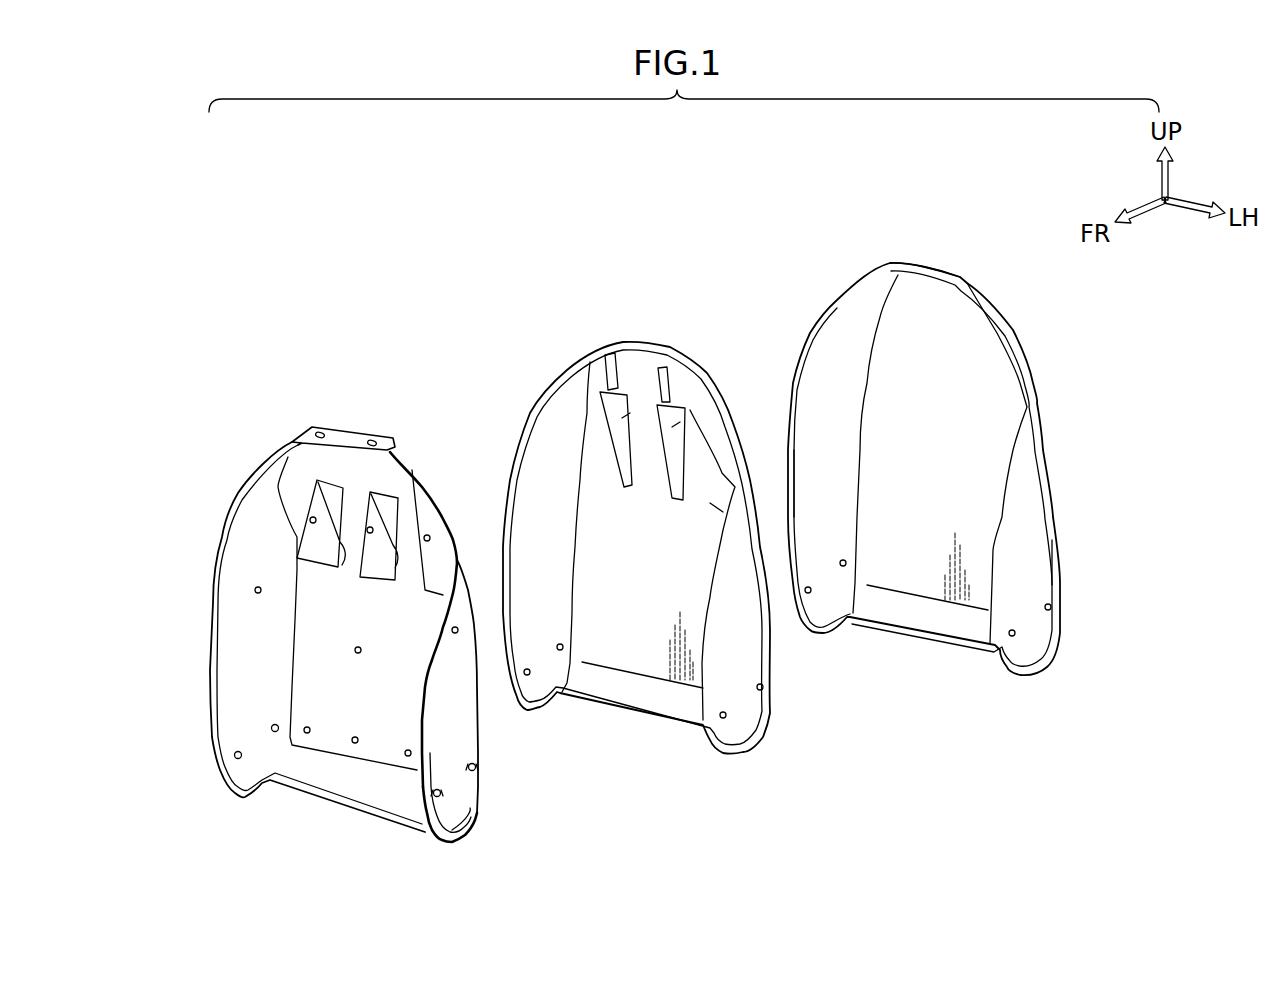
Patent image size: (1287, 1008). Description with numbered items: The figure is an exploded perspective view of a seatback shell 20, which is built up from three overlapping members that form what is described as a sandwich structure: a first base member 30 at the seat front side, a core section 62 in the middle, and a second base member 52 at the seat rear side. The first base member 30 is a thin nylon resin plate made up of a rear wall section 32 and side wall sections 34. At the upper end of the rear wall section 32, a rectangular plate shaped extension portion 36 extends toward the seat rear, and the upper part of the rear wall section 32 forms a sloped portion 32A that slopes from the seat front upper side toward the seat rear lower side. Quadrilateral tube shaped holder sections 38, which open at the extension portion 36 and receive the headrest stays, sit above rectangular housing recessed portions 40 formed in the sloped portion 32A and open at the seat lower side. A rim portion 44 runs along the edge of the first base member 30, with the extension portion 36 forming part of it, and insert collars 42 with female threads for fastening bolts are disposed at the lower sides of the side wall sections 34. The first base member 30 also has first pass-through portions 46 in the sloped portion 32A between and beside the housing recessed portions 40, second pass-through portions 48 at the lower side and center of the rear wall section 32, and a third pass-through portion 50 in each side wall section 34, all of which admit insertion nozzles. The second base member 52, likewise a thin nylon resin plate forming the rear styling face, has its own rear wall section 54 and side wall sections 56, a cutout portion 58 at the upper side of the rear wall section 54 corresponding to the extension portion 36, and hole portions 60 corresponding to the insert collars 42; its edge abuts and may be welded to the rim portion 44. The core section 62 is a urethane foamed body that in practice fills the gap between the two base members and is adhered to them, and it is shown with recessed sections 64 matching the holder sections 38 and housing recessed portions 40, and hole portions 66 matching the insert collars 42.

The seatback shell 20 is at (480, 274).
The first base member 30 is at (336, 815).
The rear wall section 32 is at (313, 467).
The sloped portion 32A is at (367, 619).
The side wall sections 34 is at (260, 550).
The extension portion 36 is at (343, 428).
The holder sections 38 is at (322, 432).
The housing recessed portions 40 is at (395, 548).
The insert collars 42 is at (441, 794).
The rim portion 44 is at (470, 830).
The first pass-through portions 46 is at (313, 520).
The second pass-through portions 48 is at (408, 753).
The third pass-through portions 50 is at (258, 590).
The second base member 52 is at (951, 668).
The rear wall section 54 is at (947, 328).
The side wall sections 56 is at (833, 303).
The cutout portion 58 is at (920, 273).
The hole portions 60 is at (808, 590).
The core section 62 is at (672, 743).
The recessed sections 64 is at (672, 373).
The hole portions 66 is at (527, 672).